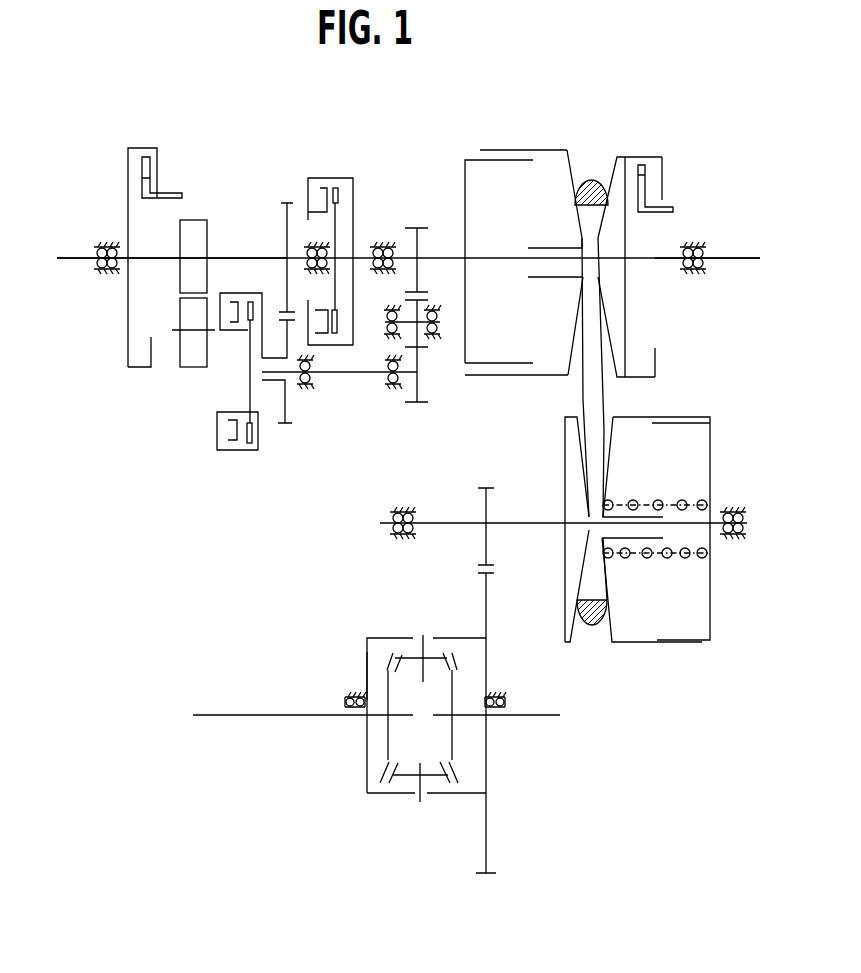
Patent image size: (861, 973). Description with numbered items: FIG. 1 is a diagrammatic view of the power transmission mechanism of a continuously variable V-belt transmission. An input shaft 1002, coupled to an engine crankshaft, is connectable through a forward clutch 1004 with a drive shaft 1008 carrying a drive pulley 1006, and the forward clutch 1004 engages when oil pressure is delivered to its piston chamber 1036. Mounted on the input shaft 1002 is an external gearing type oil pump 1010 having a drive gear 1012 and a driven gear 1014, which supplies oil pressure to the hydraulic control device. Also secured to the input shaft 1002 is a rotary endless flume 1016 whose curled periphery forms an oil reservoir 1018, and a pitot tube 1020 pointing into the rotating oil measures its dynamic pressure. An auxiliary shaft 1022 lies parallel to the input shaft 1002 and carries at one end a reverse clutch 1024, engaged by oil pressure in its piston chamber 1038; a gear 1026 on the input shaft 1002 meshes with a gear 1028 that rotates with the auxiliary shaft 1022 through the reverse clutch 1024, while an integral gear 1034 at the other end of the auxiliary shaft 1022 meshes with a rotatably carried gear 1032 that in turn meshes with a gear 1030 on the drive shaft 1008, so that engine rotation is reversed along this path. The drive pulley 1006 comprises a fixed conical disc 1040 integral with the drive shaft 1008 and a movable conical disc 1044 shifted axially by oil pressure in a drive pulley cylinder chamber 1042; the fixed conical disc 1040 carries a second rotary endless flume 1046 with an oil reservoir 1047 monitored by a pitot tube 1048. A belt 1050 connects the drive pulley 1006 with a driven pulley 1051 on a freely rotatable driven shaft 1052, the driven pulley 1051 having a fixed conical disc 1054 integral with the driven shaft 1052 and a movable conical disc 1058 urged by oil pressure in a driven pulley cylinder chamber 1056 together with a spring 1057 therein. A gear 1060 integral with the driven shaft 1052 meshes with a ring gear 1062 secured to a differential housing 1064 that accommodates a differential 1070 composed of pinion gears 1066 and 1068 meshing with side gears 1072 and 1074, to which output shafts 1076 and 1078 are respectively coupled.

The input shaft 1002 is at (82, 257).
The forward clutch 1004 is at (345, 173).
The drive pulley 1006 is at (585, 132).
The drive shaft 1008 is at (723, 263).
The oil pump 1010 is at (168, 282).
The drive gear 1012 is at (203, 229).
The driven gear 1014 is at (200, 356).
The rotary endless flume 1016 is at (127, 323).
The oil reservoir 1018 is at (138, 361).
The pitot tube 1020 is at (150, 172).
The auxiliary shaft 1022 is at (371, 373).
The reverse clutch 1024 is at (243, 335).
The gear 1026 is at (287, 233).
The gear 1028 is at (289, 408).
The gear 1030 is at (418, 246).
The gear 1032 is at (418, 277).
The integral gear 1034 is at (418, 393).
The piston chamber 1036 is at (308, 192).
The piston chamber 1038 is at (217, 430).
The fixed conical disc 1040 is at (617, 166).
The drive pulley cylinder chamber 1042 is at (502, 170).
The movable conical disc 1044 is at (568, 151).
The rotary endless flume 1046 is at (663, 157).
The oil reservoir 1047 is at (656, 363).
The pitot tube 1048 is at (646, 185).
The belt 1050 is at (607, 405).
The driven pulley 1051 is at (589, 628).
The driven shaft 1052 is at (448, 526).
The fixed conical disc 1054 is at (563, 603).
The driven pulley cylinder chamber 1056 is at (648, 632).
The spring 1057 is at (668, 559).
The movable conical disc 1058 is at (608, 627).
The gear 1060 is at (489, 487).
The ring gear 1062 is at (488, 593).
The differential housing 1064 is at (370, 636).
The pinion gear 1066 is at (410, 657).
The pinion gear 1068 is at (403, 778).
The differential 1070 is at (354, 649).
The side gear 1072 is at (387, 742).
The side gear 1074 is at (461, 752).
The output shaft 1076 is at (277, 717).
The output shaft 1078 is at (553, 718).